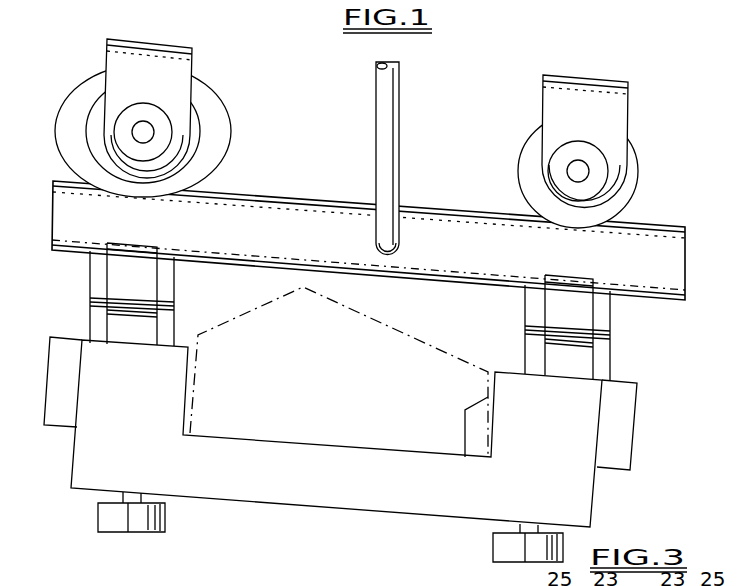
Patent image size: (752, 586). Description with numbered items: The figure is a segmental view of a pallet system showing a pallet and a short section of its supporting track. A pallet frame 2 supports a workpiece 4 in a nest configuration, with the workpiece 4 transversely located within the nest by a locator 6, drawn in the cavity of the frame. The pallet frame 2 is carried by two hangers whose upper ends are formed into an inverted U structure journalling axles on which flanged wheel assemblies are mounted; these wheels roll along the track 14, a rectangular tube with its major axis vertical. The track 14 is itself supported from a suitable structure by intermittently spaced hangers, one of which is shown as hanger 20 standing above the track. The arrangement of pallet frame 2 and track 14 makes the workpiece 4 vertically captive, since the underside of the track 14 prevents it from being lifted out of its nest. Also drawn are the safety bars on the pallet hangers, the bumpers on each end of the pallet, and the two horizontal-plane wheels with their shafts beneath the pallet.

The pallet frame 2 is at (595, 497).
The workpiece 4 is at (445, 350).
The locator 6 is at (463, 425).
The track 14 is at (677, 268).
The hanger 20 is at (393, 140).